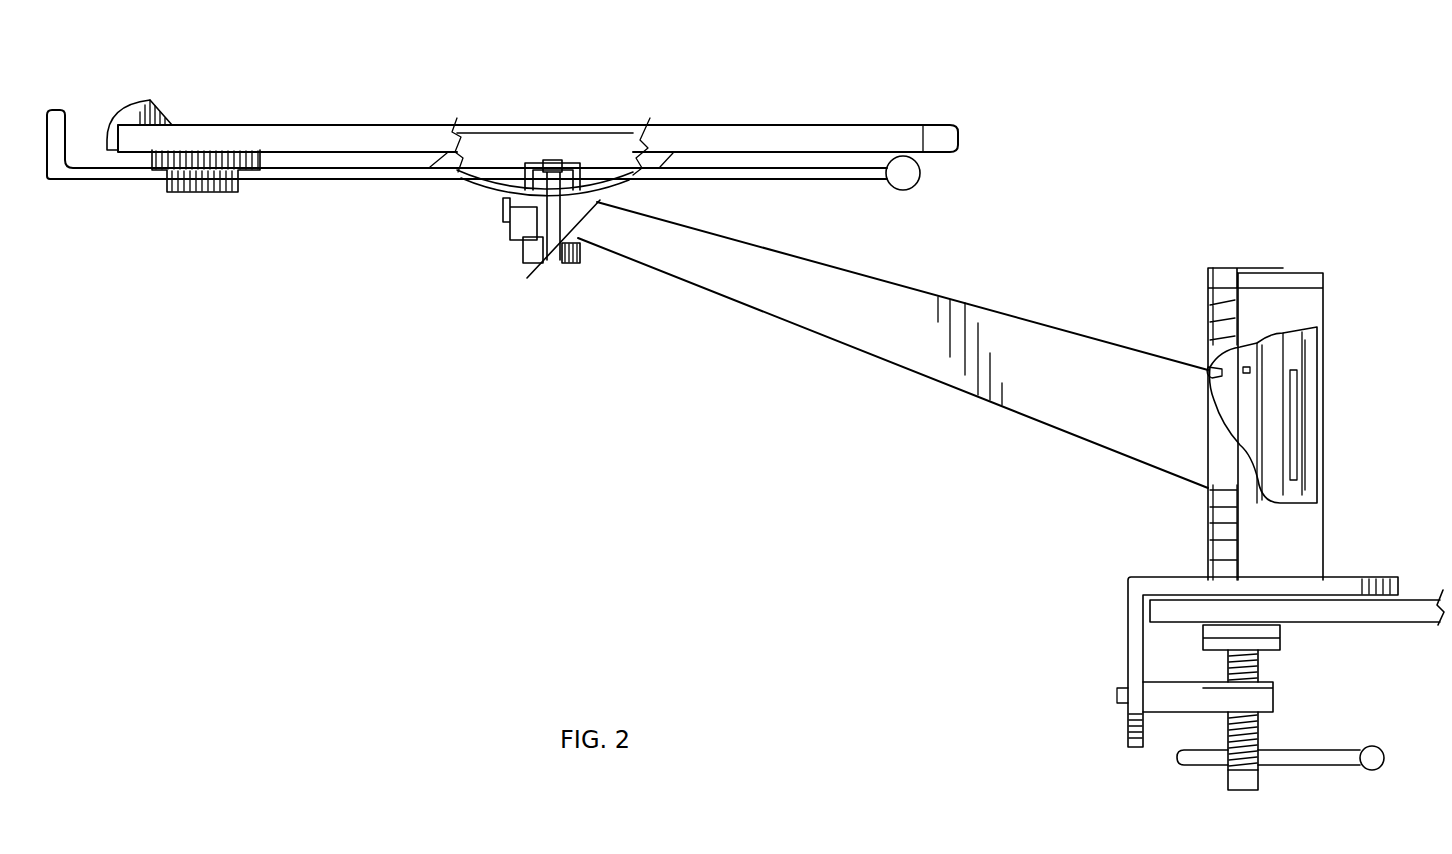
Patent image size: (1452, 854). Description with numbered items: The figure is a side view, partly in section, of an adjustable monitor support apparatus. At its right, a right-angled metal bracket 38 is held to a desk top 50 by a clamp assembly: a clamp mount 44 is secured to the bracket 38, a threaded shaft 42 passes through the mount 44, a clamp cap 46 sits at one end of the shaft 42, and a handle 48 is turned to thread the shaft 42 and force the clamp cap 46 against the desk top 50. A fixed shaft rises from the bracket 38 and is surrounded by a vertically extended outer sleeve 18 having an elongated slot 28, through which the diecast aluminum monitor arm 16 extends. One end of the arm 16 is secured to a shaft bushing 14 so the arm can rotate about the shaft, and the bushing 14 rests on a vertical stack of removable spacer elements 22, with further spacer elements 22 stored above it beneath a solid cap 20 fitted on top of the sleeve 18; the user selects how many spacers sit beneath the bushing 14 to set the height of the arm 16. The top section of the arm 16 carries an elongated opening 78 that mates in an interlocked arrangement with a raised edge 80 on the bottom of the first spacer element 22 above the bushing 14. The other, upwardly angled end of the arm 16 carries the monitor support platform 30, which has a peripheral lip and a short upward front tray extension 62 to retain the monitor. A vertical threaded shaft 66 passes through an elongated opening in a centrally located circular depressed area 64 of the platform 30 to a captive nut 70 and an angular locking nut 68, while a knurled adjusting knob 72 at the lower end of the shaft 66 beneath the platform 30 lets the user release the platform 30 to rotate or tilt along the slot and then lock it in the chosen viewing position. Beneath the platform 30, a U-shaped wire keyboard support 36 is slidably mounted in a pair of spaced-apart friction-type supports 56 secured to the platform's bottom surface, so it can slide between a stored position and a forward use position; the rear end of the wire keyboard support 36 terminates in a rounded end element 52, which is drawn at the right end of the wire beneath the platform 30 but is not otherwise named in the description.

The shaft bushing 14 is at (1310, 368).
The monitor arm 16 is at (1088, 382).
The outer sleeve 18 is at (1320, 406).
The cap 20 is at (1310, 280).
The spacer elements 22 is at (1210, 328).
The elongated slot 28 is at (1215, 523).
The monitor support platform 30 is at (843, 125).
The keyboard support 36 is at (67, 120).
The right-angled metal bracket 38 is at (1127, 605).
The threaded shaft 42 is at (1258, 665).
The clamp mount 44 is at (1180, 683).
The clamp cap 46 is at (1278, 640).
The handle 48 is at (1320, 757).
The desk top 50 is at (1418, 625).
The end ball 52 is at (918, 178).
The friction-type supports 56 is at (227, 193).
The front tray extension 62 is at (160, 101).
The circular depressed area 64 is at (510, 166).
The vertical threaded shaft 66 is at (503, 213).
The angular locking nut 68 is at (570, 167).
The captive nut 70 is at (580, 163).
The knurled adjusting knob 72 is at (570, 265).
The elongated slot or opening 78 is at (1212, 375).
The raised edge 80 is at (1295, 385).